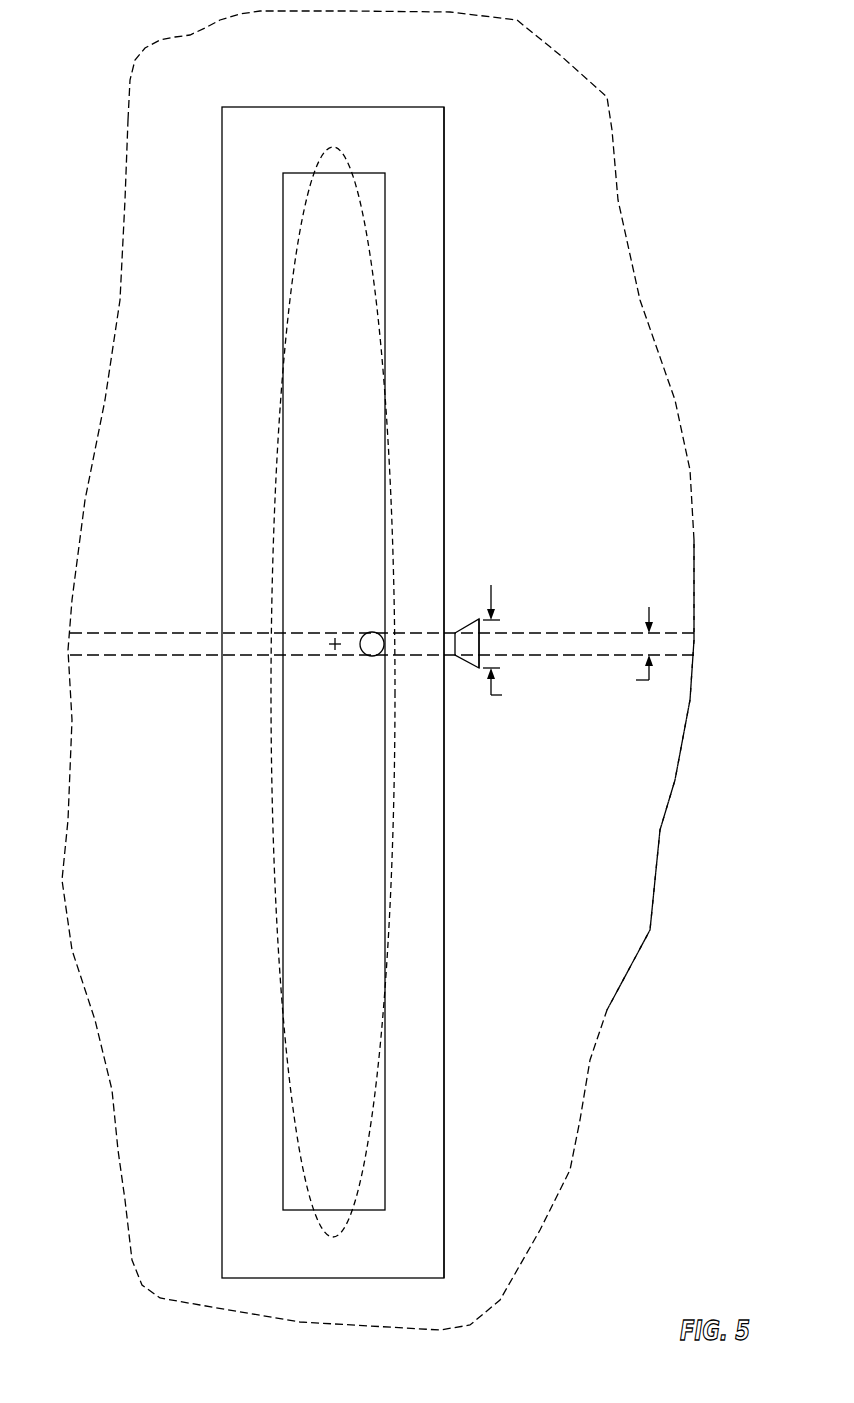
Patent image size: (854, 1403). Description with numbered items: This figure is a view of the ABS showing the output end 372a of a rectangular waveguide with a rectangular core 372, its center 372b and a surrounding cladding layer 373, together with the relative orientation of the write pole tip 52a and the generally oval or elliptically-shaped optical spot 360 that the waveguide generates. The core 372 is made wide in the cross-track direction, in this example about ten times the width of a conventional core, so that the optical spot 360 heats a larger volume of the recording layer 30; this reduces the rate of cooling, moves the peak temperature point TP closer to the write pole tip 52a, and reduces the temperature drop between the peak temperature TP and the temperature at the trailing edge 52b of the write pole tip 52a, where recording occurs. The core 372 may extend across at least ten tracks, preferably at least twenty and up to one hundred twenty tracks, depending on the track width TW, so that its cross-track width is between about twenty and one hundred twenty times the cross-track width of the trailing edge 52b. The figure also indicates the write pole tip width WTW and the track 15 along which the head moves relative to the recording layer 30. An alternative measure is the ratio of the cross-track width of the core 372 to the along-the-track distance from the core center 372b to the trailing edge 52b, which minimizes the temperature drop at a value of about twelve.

The recording layer 30 is at (645, 938).
The air bearing surface ABS is at (658, 836).
The cladding layer 373 is at (421, 312).
The output end of rectangular waveguide 372a is at (445, 457).
The rectangular core 372 is at (362, 392).
The optical spot 360 is at (392, 527).
The track 15 is at (700, 643).
The center of rectangular core 372b is at (338, 640).
The peak temperature point TP is at (370, 633).
The write pole tip 52a is at (464, 640).
The trailing edge of write pole tip 52b is at (481, 647).
The write pole width WTW is at (524, 646).
The track width TW is at (625, 655).